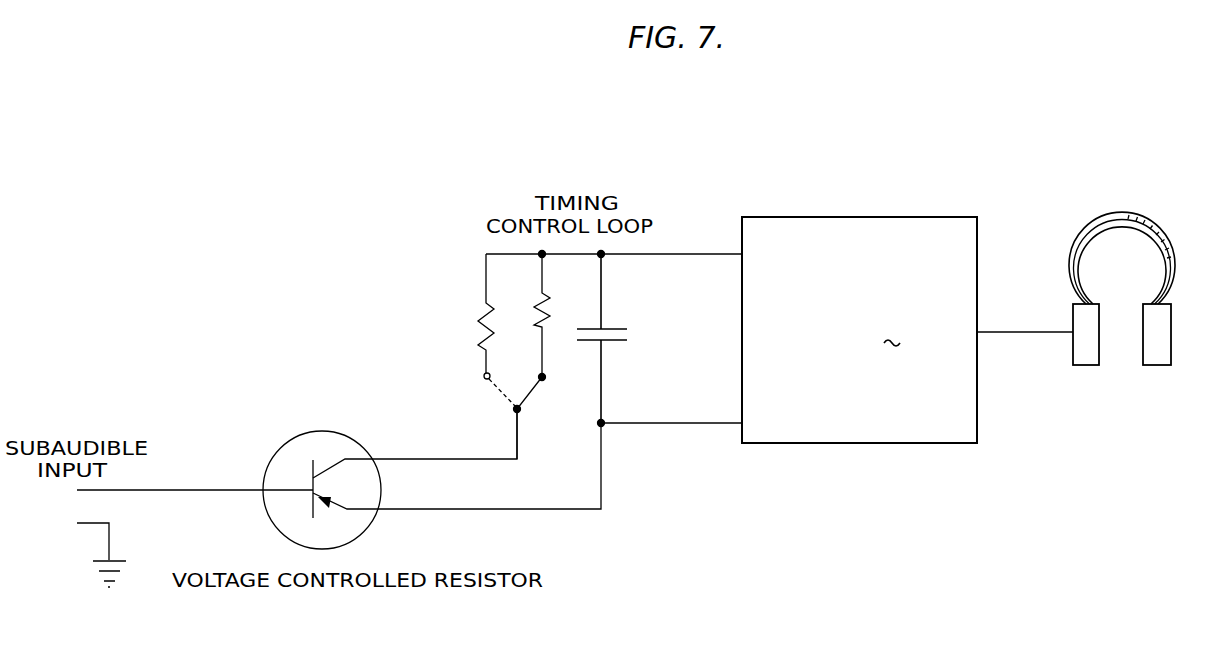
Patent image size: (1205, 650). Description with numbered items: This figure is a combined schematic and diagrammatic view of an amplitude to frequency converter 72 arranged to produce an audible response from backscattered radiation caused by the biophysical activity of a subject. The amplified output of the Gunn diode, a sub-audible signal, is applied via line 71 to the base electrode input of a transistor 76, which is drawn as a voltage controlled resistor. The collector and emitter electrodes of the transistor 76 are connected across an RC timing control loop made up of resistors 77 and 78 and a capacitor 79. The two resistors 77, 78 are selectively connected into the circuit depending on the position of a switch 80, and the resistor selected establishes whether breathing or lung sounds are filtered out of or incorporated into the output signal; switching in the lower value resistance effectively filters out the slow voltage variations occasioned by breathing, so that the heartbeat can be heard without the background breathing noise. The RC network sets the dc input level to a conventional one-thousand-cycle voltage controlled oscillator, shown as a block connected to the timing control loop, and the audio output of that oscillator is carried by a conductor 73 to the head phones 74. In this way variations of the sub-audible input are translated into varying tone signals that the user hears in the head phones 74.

The line 71 is at (233, 489).
The amplitude to frequency converter 72 is at (718, 205).
The conductor 73 is at (1025, 330).
The head phones 74 is at (1100, 358).
The transistor 76 is at (369, 449).
The resistor 77 is at (482, 306).
The resistor 78 is at (545, 323).
The capacitor 79 is at (617, 343).
The switch 80 is at (522, 398).